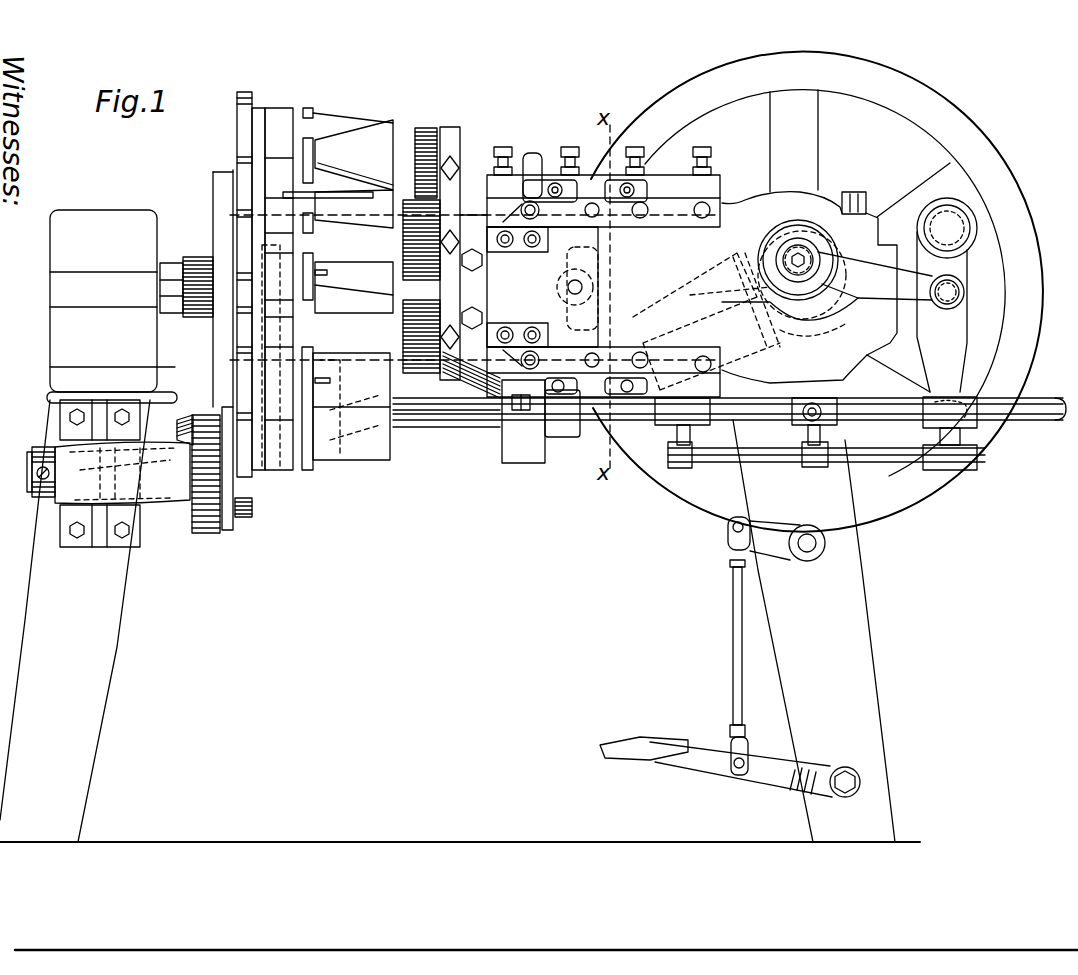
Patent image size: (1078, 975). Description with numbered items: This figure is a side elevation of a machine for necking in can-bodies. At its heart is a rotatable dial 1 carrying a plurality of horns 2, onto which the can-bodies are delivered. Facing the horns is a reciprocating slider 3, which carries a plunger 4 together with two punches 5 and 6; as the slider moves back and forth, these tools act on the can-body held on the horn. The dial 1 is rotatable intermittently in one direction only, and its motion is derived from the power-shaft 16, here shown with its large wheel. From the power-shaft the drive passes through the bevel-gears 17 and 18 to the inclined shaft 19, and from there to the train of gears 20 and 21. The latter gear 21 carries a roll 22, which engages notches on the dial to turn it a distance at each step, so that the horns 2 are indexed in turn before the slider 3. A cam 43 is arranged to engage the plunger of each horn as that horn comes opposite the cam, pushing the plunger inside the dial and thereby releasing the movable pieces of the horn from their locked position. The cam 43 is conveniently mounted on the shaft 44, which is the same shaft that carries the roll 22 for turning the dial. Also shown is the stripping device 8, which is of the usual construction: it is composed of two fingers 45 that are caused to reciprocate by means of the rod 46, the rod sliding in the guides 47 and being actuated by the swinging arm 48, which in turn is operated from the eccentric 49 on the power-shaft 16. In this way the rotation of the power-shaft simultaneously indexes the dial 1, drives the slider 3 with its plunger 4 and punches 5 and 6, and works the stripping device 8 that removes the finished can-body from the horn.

The rotatable dial 1 is at (237, 143).
The horns 2 is at (372, 130).
The reciprocating slider 3 is at (603, 272).
The plunger 4 is at (428, 128).
The punch 5 is at (428, 223).
The punch 6 is at (413, 380).
The stripping device 8 is at (484, 430).
The power-shaft 16 is at (817, 292).
The bevel-gear 17 is at (812, 322).
The bevel-gear 18 is at (778, 340).
The inclined shaft 19 is at (345, 440).
The gear 20 is at (185, 425).
The gear 21 is at (205, 533).
The roll 22 is at (248, 518).
The cam 43 is at (232, 532).
The shaft 44 is at (30, 470).
The fingers 45 is at (472, 432).
The rod 46 is at (597, 425).
The guides 47 is at (670, 426).
The swinging arm 48 is at (955, 370).
The eccentric 49 is at (815, 283).